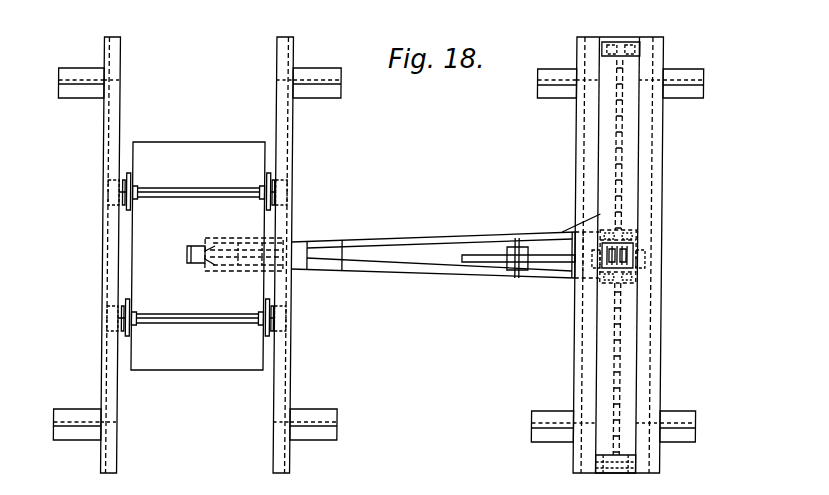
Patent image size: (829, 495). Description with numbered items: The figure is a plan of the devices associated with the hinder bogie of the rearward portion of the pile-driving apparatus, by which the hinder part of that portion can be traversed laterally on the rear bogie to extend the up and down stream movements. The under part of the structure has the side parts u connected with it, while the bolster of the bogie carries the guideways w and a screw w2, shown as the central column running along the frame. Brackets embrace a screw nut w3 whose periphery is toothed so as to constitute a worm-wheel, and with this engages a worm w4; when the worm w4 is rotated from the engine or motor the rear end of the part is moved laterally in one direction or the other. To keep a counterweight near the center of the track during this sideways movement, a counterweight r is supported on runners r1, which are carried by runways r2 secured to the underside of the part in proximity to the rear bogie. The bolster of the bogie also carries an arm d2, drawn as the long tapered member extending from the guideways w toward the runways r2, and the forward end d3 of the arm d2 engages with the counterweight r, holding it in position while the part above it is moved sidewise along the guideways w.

The counterweight r is at (198, 256).
The runners r1 is at (113, 184).
The runways r2 is at (286, 129).
The arm d2 is at (445, 240).
The forward end of arm d3 is at (192, 246).
The side parts u is at (550, 73).
The guideways w is at (578, 152).
The screw w2 is at (622, 136).
The screw nut w3 is at (635, 232).
The worm w4 is at (633, 252).